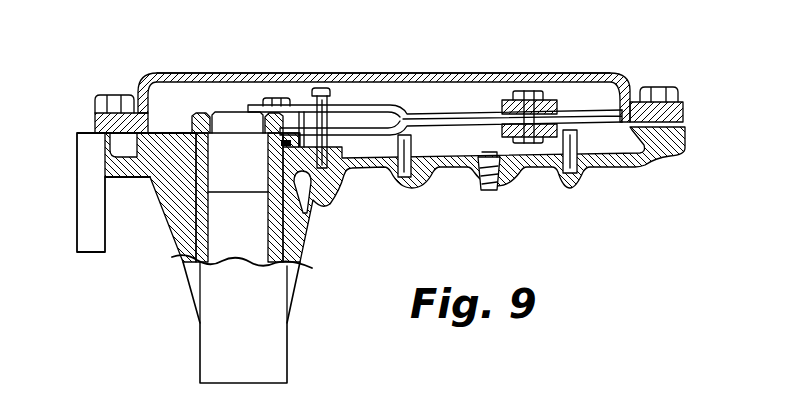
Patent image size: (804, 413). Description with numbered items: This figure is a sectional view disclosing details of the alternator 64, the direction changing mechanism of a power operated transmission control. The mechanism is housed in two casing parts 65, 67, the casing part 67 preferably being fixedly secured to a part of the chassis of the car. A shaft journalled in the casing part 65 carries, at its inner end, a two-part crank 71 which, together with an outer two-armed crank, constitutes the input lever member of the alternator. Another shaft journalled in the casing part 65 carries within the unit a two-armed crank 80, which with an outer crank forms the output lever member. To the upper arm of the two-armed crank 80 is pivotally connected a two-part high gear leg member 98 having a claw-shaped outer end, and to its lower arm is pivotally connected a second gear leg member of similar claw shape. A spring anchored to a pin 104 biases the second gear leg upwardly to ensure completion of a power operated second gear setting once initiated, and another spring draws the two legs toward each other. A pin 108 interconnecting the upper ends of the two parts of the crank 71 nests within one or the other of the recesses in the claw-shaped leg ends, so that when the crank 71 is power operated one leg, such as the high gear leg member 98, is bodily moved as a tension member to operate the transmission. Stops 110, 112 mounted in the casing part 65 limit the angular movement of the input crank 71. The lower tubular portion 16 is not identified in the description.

The tubular body 16 is at (223, 240).
The alternator 64 is at (423, 73).
The casing part 65 is at (378, 170).
The casing part 67 is at (352, 75).
The two-part crank 71 is at (497, 100).
The two-armed crank 80 is at (204, 112).
The high gear leg member 98 is at (422, 119).
The pin 104 is at (313, 89).
The pin 108 is at (544, 90).
The stop 110 is at (413, 188).
The stop 112 is at (586, 176).